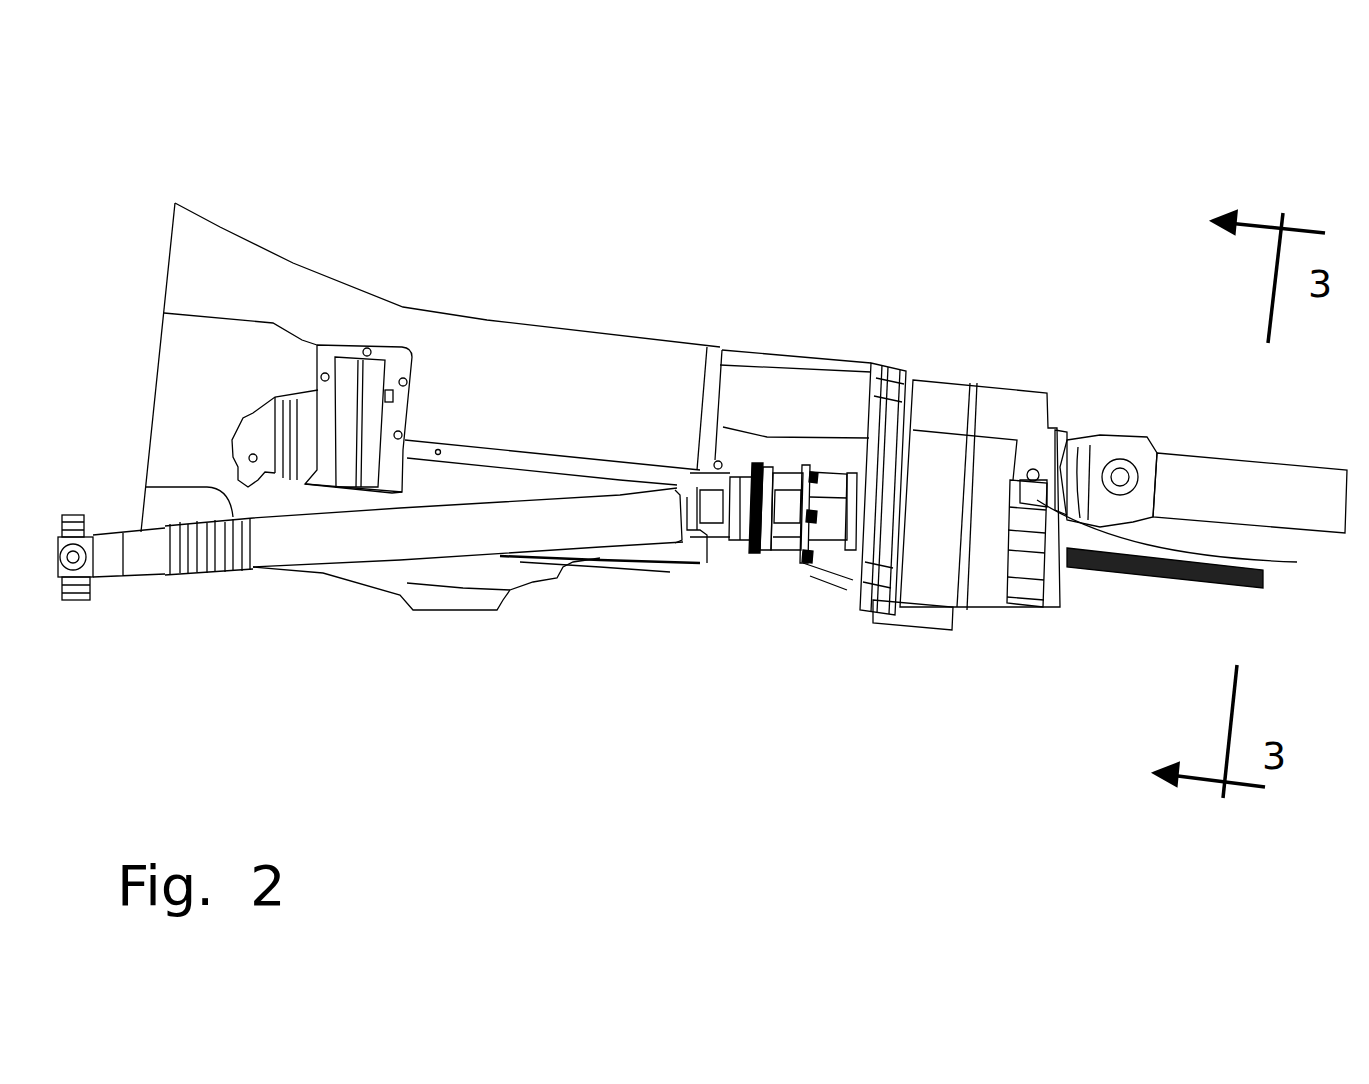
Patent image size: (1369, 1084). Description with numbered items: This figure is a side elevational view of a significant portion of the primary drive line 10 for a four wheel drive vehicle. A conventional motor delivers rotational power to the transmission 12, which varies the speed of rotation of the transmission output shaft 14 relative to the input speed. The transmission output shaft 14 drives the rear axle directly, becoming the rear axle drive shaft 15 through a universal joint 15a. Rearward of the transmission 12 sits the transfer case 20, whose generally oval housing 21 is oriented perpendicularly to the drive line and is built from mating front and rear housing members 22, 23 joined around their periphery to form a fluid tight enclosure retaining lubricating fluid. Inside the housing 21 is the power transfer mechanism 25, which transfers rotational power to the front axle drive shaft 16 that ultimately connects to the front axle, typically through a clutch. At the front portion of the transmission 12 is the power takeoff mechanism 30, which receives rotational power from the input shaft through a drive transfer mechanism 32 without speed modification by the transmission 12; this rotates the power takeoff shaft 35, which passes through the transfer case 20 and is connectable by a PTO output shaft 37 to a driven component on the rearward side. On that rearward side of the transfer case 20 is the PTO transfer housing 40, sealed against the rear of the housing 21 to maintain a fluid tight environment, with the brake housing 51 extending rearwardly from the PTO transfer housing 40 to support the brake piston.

The primary drive line 10 is at (228, 148).
The transmission 12 is at (541, 357).
The transmission output shaft 14 is at (1065, 452).
The rear axle drive shaft 15 is at (1240, 485).
The universal joint 15a is at (1110, 432).
The front axle drive shaft 16 is at (408, 550).
The transfer case 20 is at (932, 690).
The housing 21 is at (900, 613).
The front housing member 22 is at (857, 600).
The rear housing member 23 is at (930, 590).
The power transfer mechanism 25 is at (925, 350).
The power takeoff mechanism 30 is at (255, 396).
The drive transfer mechanism 32 is at (340, 473).
The power takeoff shaft 35 is at (618, 470).
The PTO output shaft 37 is at (1130, 577).
The PTO transfer housing 40 is at (972, 610).
The brake housing 51 is at (1190, 542).